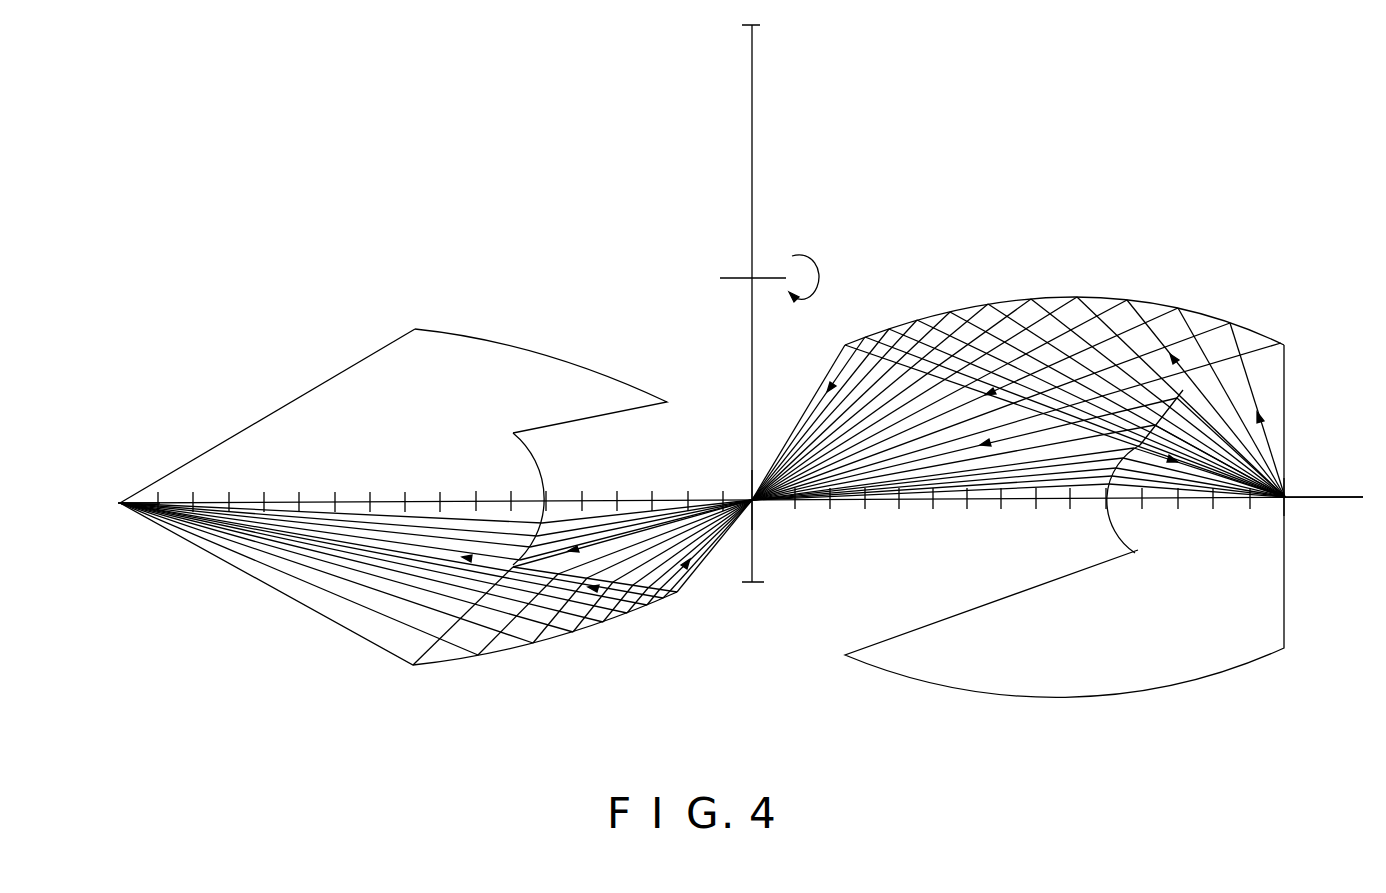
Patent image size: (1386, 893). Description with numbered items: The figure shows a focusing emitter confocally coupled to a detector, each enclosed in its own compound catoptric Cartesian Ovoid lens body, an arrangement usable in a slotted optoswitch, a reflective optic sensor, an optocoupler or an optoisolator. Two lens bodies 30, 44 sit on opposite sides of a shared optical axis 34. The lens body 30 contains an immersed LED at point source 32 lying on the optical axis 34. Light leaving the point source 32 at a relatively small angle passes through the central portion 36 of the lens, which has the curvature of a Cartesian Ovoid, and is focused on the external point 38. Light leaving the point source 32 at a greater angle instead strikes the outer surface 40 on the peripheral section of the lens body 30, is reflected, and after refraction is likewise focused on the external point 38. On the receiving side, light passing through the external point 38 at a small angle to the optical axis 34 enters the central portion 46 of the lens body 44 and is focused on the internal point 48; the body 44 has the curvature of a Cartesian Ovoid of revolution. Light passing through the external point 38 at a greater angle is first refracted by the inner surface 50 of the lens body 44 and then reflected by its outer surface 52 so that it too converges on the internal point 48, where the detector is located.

The lens body 30 is at (1158, 696).
The point source 32 is at (1288, 492).
The optical axis 34 is at (1327, 498).
The central portion 36 is at (1108, 522).
The external point 38 is at (760, 505).
The outer surface 40 is at (1004, 300).
The lens body 44 is at (323, 377).
The central portion 46 is at (547, 460).
The internal point 48 is at (117, 502).
The inner surface 50 is at (627, 410).
The outer surface 52 is at (455, 667).